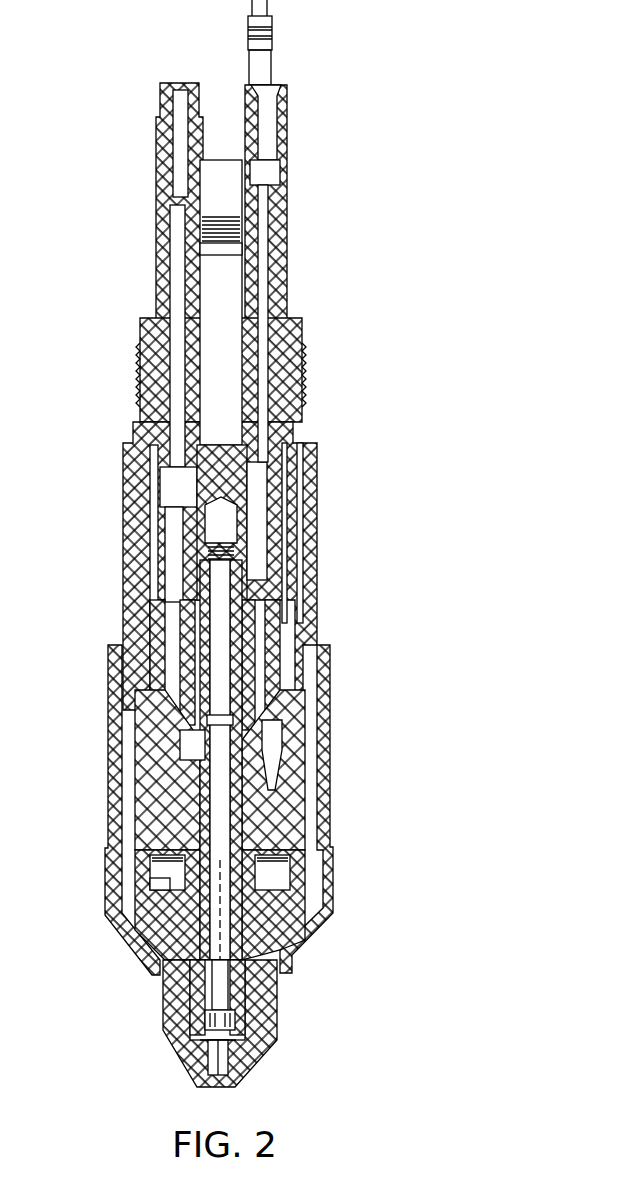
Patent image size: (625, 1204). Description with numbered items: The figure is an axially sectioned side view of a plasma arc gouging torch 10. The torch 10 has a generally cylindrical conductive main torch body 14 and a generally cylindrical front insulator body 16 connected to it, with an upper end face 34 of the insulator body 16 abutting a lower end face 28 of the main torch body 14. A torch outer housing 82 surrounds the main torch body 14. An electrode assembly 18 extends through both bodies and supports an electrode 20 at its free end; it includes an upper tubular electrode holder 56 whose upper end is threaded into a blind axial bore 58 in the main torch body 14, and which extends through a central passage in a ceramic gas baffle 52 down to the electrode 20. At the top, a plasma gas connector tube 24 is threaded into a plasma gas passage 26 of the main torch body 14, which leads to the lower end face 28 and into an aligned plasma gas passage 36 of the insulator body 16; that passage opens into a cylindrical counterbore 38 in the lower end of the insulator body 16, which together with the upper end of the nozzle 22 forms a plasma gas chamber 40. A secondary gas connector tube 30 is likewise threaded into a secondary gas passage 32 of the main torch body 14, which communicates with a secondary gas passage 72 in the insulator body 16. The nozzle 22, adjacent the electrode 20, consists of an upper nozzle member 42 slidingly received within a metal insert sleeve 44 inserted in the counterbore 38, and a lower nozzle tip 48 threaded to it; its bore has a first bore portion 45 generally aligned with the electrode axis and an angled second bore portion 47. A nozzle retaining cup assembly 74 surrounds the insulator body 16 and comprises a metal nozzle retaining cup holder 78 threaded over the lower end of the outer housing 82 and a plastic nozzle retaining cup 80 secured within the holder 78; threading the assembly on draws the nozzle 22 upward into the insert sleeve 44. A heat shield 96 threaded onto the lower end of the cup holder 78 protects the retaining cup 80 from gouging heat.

The plasma arc gouging torch 10 is at (357, 148).
The main torch body 14 is at (223, 465).
The front insulator body 16 is at (147, 808).
The electrode assembly 18 is at (285, 836).
The electrode 20 is at (240, 1020).
The nozzle 22 is at (278, 1002).
The plasma gas connector tube 24 is at (163, 103).
The plasma gas passage 26 is at (173, 487).
The lower end face 28 is at (195, 692).
The secondary gas connector tube 30 is at (284, 118).
The secondary gas passage 32 is at (250, 498).
The upper end face 34 is at (297, 652).
The plasma gas passage 36 is at (170, 745).
The cylindrical counterbore 38 is at (277, 865).
The plasma gas chamber 40 is at (162, 862).
The upper nozzle member 42 is at (170, 950).
The metal insert sleeve 44 is at (158, 883).
The first bore portion 45 is at (228, 1062).
The second bore portion 47 is at (203, 1067).
The lower nozzle tip 48 is at (172, 1018).
The ceramic gas baffle 52 is at (180, 825).
The upper tubular electrode holder 56 is at (203, 708).
The blind axial bore 58 is at (225, 517).
The secondary gas passage 72 is at (268, 738).
The nozzle retaining cup assembly 74 is at (330, 798).
The nozzle retaining cup holder 78 is at (323, 685).
The nozzle retaining cup 80 is at (305, 945).
The torch outer housing 82 is at (312, 560).
The heat shield 96 is at (327, 908).